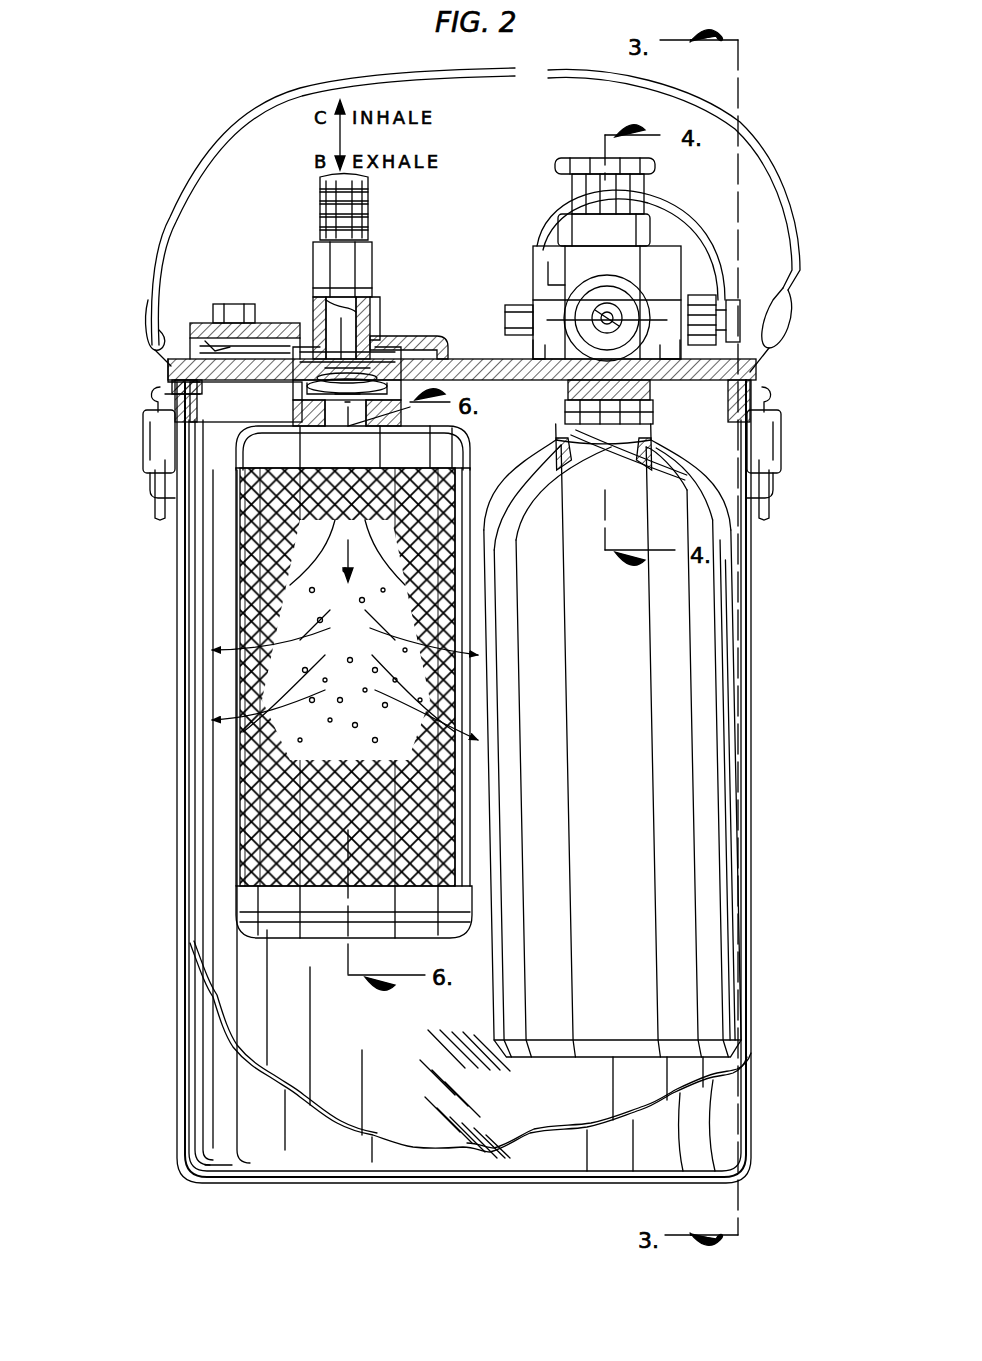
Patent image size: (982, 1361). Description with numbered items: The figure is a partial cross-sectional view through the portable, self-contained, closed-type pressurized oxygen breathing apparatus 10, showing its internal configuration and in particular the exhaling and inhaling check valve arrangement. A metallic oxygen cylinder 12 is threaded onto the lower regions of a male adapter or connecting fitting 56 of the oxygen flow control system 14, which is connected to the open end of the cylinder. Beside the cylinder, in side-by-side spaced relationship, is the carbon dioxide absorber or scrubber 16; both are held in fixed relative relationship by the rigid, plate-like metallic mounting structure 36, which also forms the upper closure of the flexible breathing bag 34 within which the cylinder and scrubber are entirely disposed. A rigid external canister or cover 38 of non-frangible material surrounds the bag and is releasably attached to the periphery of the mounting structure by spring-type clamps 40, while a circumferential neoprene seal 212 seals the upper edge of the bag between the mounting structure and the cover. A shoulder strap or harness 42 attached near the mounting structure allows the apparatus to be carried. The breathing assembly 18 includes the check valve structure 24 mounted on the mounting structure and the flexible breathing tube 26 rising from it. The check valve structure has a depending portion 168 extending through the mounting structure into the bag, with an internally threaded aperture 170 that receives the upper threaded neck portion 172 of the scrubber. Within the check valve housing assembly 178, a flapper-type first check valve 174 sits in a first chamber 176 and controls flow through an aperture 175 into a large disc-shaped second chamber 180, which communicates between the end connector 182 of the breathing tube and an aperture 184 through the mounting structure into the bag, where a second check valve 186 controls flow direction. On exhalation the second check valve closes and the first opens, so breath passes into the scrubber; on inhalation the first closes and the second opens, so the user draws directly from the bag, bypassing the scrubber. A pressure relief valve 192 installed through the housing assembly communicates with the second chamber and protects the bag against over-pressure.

The breathing apparatus 10 is at (455, 262).
The oxygen cylinder 12 is at (707, 905).
The oxygen flow control system 14 is at (705, 265).
The carbon dioxide absorber or scrubber 16 is at (240, 855).
The breathing assembly 18 is at (296, 259).
The check valve structure 24 is at (303, 282).
The flexible breathing tube 26 is at (320, 196).
The breathing bag 34 is at (205, 1162).
The mounting structure 36 is at (465, 345).
The external canister or cover 38 is at (178, 795).
The clamps 40 is at (148, 456).
The shoulder strap or harness 42 is at (170, 222).
The male adapter or connecting fitting 56 is at (655, 412).
The depending portion 168 is at (330, 404).
The internally threaded aperture 170 is at (360, 414).
The upper threaded neck portion 172 is at (367, 412).
The first check valve 174 is at (317, 369).
The aperture 175 is at (366, 315).
The first chamber 176 is at (392, 370).
The check valve housing assembly 178 is at (417, 342).
The second chamber 180 is at (213, 340).
The end connector 182 is at (357, 292).
The aperture 184 is at (172, 382).
The second check valve 186 is at (205, 346).
The pressure relief valve 192 is at (233, 316).
The circumferential neoprene seal 212 is at (182, 360).